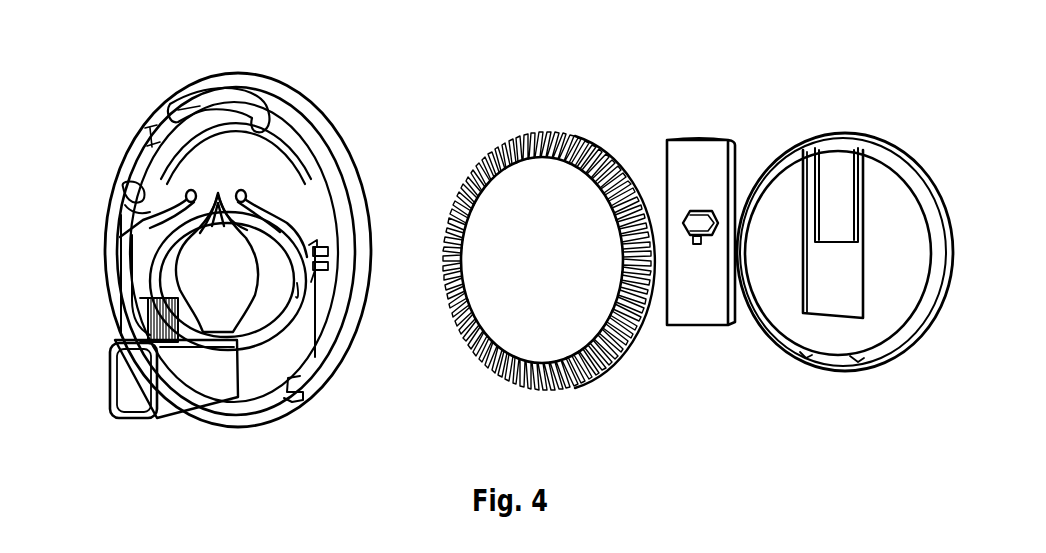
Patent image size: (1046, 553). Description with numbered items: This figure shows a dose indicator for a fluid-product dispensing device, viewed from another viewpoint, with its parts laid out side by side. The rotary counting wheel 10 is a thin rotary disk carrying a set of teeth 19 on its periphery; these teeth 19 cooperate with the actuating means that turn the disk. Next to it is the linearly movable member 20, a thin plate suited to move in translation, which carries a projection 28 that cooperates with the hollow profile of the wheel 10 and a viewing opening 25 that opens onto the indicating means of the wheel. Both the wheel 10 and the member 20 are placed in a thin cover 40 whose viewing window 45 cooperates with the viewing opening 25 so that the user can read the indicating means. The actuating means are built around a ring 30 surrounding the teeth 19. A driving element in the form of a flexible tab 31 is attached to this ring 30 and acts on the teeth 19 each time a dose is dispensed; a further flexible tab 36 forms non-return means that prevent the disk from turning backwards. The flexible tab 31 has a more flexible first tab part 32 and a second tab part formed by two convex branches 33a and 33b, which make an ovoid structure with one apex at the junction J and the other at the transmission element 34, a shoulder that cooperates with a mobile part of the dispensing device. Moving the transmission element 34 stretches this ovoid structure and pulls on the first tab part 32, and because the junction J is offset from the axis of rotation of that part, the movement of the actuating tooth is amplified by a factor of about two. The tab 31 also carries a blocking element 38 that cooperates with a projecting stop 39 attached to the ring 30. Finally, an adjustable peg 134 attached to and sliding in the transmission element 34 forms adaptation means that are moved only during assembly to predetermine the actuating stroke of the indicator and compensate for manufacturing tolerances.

The rotary counting wheel 10 is at (507, 137).
The teeth 19 is at (584, 136).
The linearly movable member 20 is at (700, 152).
The viewing opening 25 is at (697, 223).
The projection 28 is at (697, 246).
The ring 30 is at (352, 148).
The flexible tab 31 is at (232, 167).
The first tab part 32 is at (140, 215).
The branch 33a is at (110, 282).
The branch 33b is at (265, 362).
The transmission element 34 is at (296, 398).
The flexible tab 36 is at (203, 117).
The blocking element 38 is at (322, 252).
The projecting stop 39 is at (330, 278).
The cover 40 is at (928, 190).
The viewing window 45 is at (835, 185).
The adjustable peg 134 is at (148, 300).
The junction J is at (225, 217).